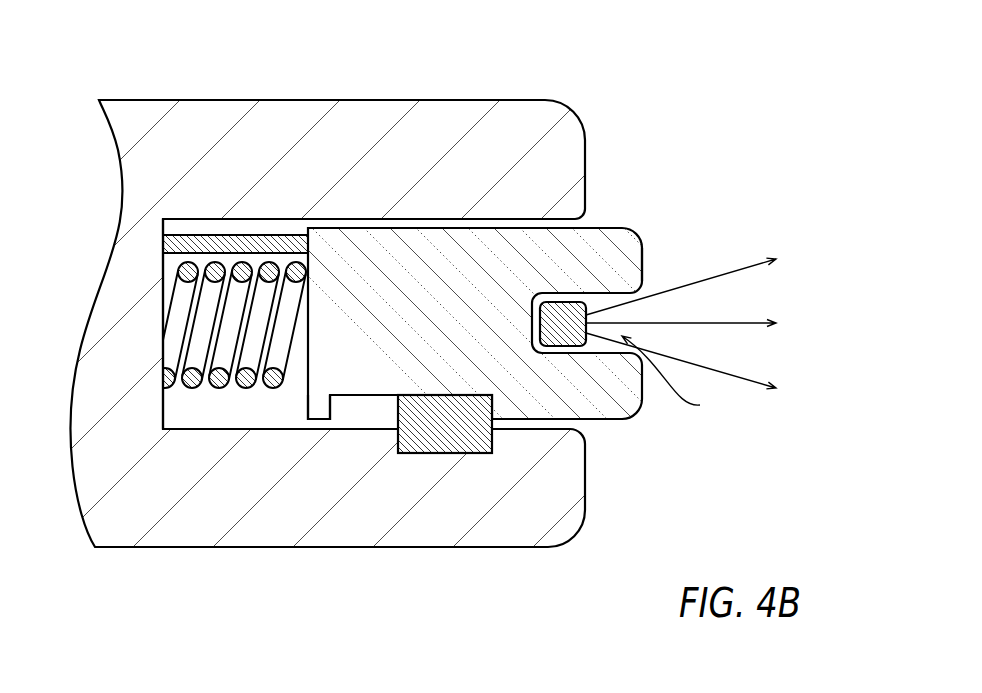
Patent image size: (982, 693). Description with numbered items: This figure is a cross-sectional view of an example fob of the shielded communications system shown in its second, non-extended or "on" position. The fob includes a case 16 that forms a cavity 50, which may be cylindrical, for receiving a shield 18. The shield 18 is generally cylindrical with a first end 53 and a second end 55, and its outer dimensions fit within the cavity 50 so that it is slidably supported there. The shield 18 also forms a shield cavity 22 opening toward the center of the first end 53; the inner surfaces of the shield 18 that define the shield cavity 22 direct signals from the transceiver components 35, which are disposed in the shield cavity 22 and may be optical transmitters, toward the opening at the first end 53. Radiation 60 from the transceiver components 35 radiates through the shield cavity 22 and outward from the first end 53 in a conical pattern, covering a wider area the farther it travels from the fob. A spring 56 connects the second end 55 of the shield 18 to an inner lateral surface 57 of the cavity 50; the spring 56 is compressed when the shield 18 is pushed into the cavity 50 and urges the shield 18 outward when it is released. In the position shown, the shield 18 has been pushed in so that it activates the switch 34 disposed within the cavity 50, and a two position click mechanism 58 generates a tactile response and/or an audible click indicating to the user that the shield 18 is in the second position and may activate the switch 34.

The case 16 is at (410, 100).
The shield 18 is at (490, 227).
The shield cavity 22 is at (676, 378).
The switch 34 is at (275, 243).
The transceiver components 35 is at (570, 302).
The cavity 50 is at (232, 415).
The first end 53 is at (645, 272).
The second end 55 is at (308, 396).
The spring 56 is at (270, 387).
The inner lateral surface 57 is at (163, 405).
The two position click mechanism 58 is at (455, 455).
The radiation 60 is at (733, 370).